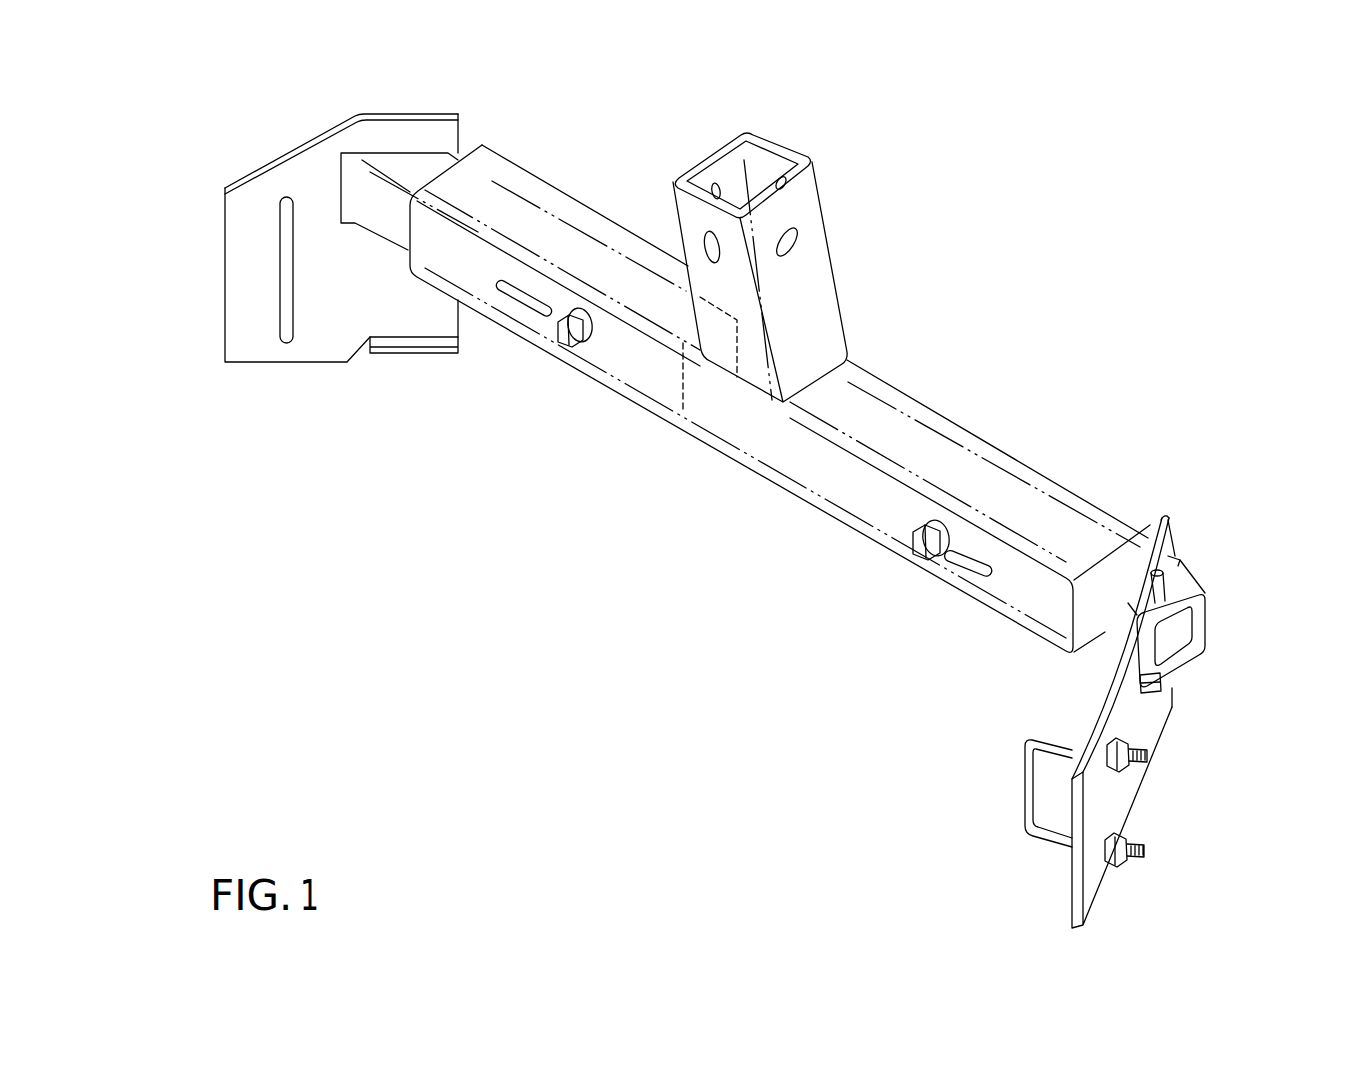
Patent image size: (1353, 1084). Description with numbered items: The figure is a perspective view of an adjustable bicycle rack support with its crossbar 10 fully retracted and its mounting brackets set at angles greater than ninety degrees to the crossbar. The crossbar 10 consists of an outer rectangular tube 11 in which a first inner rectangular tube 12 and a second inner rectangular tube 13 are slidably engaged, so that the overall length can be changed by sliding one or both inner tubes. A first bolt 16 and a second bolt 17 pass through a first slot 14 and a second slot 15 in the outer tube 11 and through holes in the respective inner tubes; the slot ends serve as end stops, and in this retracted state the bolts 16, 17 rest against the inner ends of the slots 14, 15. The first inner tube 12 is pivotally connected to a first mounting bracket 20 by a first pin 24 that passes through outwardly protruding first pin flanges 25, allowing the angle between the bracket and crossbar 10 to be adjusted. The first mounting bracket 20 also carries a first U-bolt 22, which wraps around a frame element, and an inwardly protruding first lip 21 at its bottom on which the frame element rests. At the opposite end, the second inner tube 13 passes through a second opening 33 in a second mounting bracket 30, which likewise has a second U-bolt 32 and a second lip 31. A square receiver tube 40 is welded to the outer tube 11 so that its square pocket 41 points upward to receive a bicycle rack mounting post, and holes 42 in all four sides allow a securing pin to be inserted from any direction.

The crossbar 10 is at (930, 376).
The outer rectangular tube 11 is at (1008, 463).
The first inner rectangular tube 12 is at (1183, 588).
The second inner rectangular tube 13 is at (343, 218).
The first slot 14 is at (975, 573).
The second slot 15 is at (525, 307).
The first bolt 16 is at (913, 558).
The second bolt 17 is at (561, 347).
The first mounting bracket 20 is at (1092, 882).
The first lip 21 is at (1173, 722).
The first U-bolt 22 is at (1026, 811).
The first pin 24 is at (1168, 548).
The first pin flanges 25 is at (1181, 560).
The second mounting bracket 30 is at (252, 342).
The second lip 31 is at (410, 355).
The second U-bolt 32 is at (285, 270).
The second opening 33 is at (357, 190).
The square receiver tube 40 is at (803, 290).
The square pocket 41 is at (763, 166).
The holes 42 is at (797, 237).